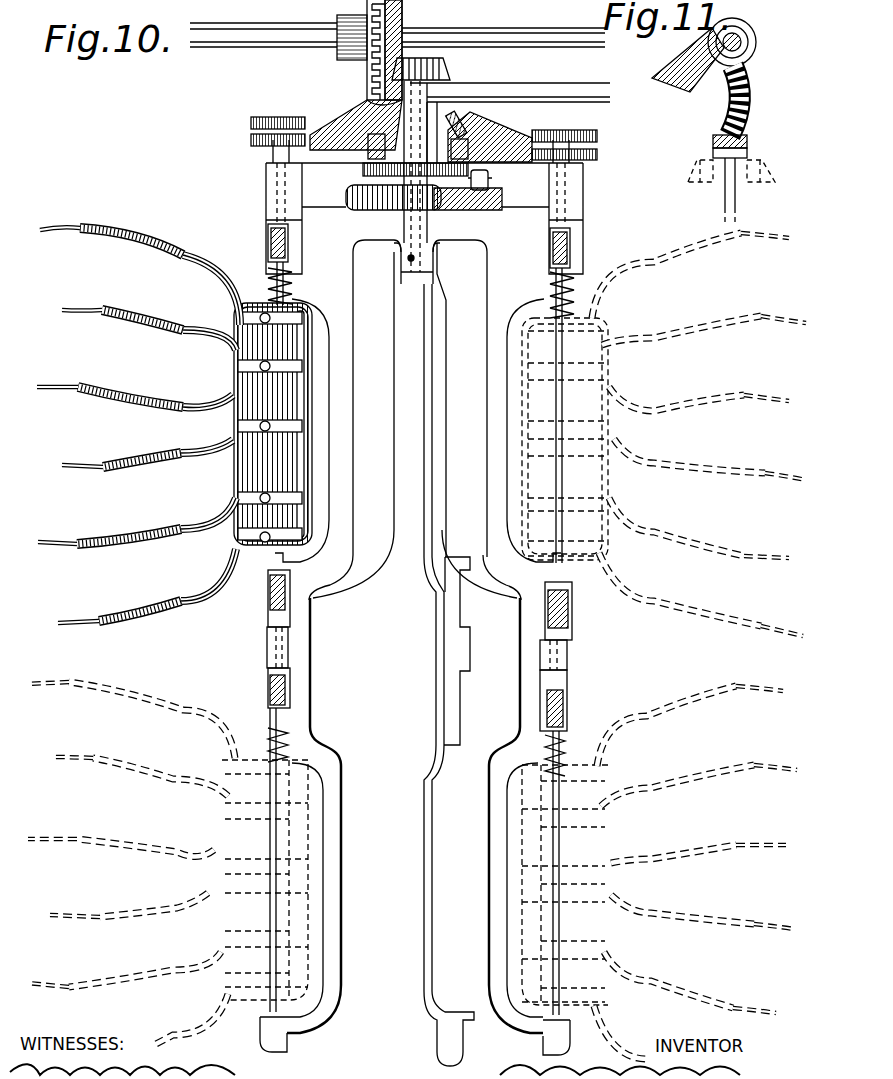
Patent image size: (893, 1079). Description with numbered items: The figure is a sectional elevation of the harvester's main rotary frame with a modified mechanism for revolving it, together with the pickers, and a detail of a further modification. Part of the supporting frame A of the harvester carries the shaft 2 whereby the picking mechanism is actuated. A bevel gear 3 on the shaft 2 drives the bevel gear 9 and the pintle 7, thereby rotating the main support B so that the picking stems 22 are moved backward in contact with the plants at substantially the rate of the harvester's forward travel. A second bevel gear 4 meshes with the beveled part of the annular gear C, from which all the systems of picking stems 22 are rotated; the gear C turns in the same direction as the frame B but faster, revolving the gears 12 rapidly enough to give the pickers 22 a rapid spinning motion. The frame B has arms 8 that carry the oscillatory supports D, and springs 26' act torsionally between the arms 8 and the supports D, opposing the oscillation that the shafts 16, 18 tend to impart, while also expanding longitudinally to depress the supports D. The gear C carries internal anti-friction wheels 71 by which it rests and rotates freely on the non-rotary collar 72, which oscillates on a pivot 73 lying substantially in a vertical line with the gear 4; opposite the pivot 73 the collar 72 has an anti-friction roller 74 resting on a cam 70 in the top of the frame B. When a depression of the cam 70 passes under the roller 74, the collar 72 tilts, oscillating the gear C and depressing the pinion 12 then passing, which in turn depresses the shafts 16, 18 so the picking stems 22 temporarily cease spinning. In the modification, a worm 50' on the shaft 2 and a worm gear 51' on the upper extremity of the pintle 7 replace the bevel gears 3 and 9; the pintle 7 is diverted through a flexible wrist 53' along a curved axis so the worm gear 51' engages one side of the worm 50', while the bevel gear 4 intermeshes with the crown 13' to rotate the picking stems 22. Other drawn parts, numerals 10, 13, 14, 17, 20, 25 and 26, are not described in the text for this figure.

In FIG. 10, the shaft 2 is at (397, 30).
In FIG. 11, the shaft 2 is at (742, 42).
In FIG. 10, the bevel gear 3 is at (402, 22).
In FIG. 10, the bevel gear 4 is at (352, 30).
In FIG. 10, the pintle 7 is at (430, 215).
In FIG. 11, the pintle 7 is at (737, 197).
In FIG. 10, the arms 8 is at (415, 653).
In FIG. 10, the bevel gear 9 is at (450, 68).
In FIG. 10, the threaded sleeve 10 is at (545, 130).
In FIG. 10, the gears 12 is at (585, 130).
In FIG. 10, the supporting post 13 is at (423, 186).
In FIG. 10, the crown 13' is at (489, 129).
In FIG. 11, the crown 13' is at (740, 158).
In FIG. 10, the lower threaded arm 14 is at (597, 152).
In FIG. 10, the shafts 16 is at (565, 392).
In FIG. 10, the guide block 17 is at (560, 685).
In FIG. 10, the shafts 18 is at (560, 835).
In FIG. 10, the adjusting block 20 is at (571, 252).
In FIG. 10, the picking stems 22 is at (417, 611).
In FIG. 10, the flexible finger 25 is at (417, 637).
In FIG. 10, the spring 26 is at (409, 293).
In FIG. 10, the springs 26' is at (421, 522).
In FIG. 11, the worm 50' is at (741, 37).
In FIG. 11, the worm gear 51' is at (684, 60).
In FIG. 11, the flexible wrist 53' is at (750, 100).
In FIG. 10, the cam 70 is at (502, 200).
In FIG. 10, the anti-friction wheels 71 is at (480, 130).
In FIG. 10, the collar 72 is at (363, 170).
In FIG. 10, the pivot 73 is at (360, 186).
In FIG. 10, the anti-friction roller 74 is at (490, 177).
In FIG. 10, the supporting frame A is at (510, 110).
In FIG. 10, the main support B is at (424, 218).
In FIG. 10, the annular gear C is at (356, 120).
In FIG. 10, the oscillatory supports D is at (415, 652).